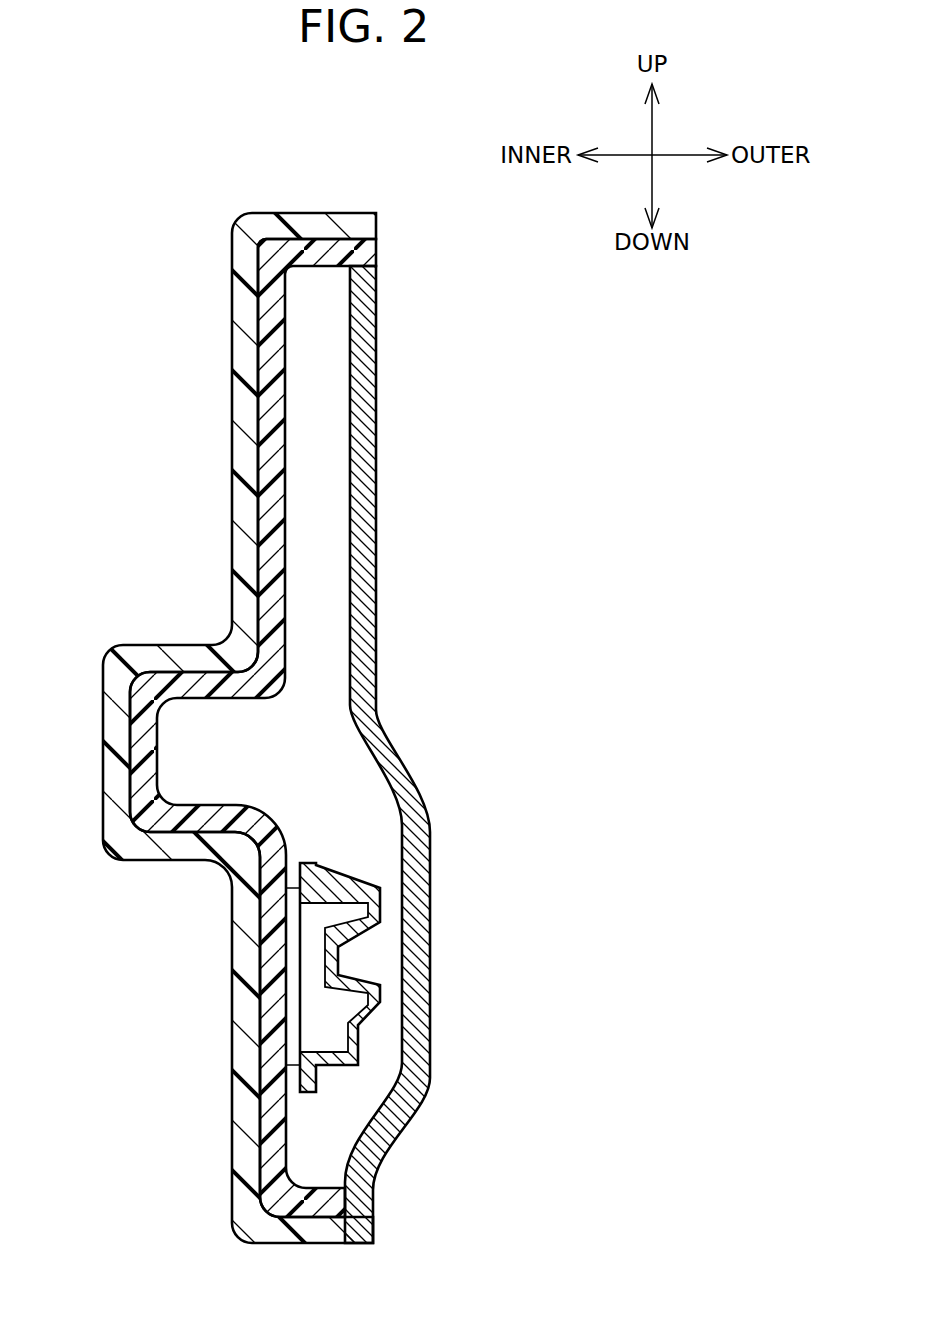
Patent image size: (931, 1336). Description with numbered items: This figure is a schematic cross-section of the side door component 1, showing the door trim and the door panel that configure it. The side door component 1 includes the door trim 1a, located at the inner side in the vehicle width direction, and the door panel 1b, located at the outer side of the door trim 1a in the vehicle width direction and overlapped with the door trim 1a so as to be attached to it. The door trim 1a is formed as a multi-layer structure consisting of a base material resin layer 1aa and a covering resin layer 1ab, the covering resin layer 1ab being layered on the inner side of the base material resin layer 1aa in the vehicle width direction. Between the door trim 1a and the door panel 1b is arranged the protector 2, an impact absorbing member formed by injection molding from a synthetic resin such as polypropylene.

The side door component 1 is at (126, 275).
The door trim 1a is at (457, 201).
The covering resin layer 1ab is at (377, 218).
The base material resin layer 1aa is at (377, 250).
The door panel 1b is at (377, 574).
The protector 2 is at (366, 1008).